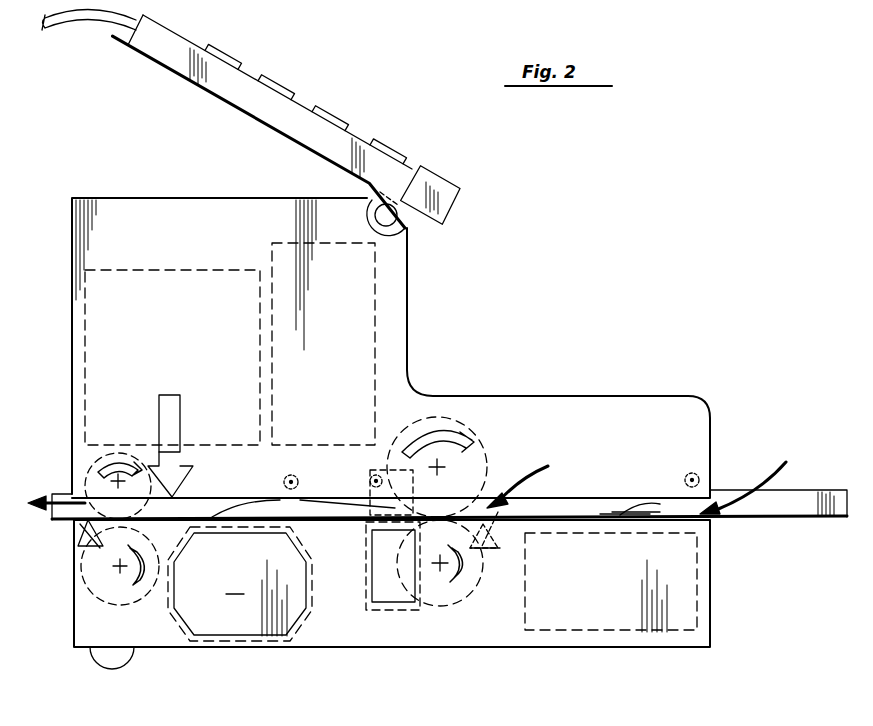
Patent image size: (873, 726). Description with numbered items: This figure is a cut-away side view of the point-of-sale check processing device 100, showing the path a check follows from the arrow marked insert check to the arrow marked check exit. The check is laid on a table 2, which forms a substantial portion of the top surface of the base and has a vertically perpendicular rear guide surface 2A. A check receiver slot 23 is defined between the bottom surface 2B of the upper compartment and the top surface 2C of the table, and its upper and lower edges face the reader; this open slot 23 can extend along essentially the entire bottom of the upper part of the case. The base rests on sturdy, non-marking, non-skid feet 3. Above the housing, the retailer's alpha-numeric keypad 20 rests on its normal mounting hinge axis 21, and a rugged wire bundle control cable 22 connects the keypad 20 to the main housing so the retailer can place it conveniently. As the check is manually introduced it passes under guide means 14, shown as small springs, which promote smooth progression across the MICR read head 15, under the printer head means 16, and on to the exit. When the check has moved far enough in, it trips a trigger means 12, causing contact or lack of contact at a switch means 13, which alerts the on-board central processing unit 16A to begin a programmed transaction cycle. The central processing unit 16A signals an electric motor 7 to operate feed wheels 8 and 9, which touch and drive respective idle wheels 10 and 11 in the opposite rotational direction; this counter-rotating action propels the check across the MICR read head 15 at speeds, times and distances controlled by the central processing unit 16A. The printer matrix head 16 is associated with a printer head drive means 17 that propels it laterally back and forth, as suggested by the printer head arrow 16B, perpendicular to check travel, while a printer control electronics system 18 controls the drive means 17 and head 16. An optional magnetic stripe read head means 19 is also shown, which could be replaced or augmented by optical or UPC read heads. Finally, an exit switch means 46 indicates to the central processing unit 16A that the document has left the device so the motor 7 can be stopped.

The point-of-sale device 100 is at (520, 230).
The table 2 is at (62, 522).
The rear guide surface 2A is at (792, 490).
The bottom surface of the upper compartment 2B is at (310, 498).
The top surface of the table 2C is at (348, 520).
The feet 3 is at (120, 660).
The electric motor 7 is at (240, 584).
The feed wheel 8 is at (450, 610).
The feed wheel 9 is at (116, 602).
The idle wheel 10 is at (482, 446).
The idle wheel 11 is at (114, 452).
The trigger means 12 is at (552, 476).
The switch means 13 is at (492, 552).
The guide means 14 is at (284, 480).
The MICR read head 15 is at (383, 588).
The printer matrix head 16 is at (178, 466).
The central processing unit 16A is at (592, 633).
The printer head arrow 16B is at (196, 486).
The printer head drive means 17 is at (152, 269).
The printer control electronics system 18 is at (376, 312).
The magnetic stripe read head means 19 is at (388, 484).
The keypad 20 is at (312, 106).
The hinge axis 21 is at (394, 222).
The control cable 22 is at (108, 24).
The check receiver slot 23 is at (222, 498).
The exit switch means 46 is at (84, 556).